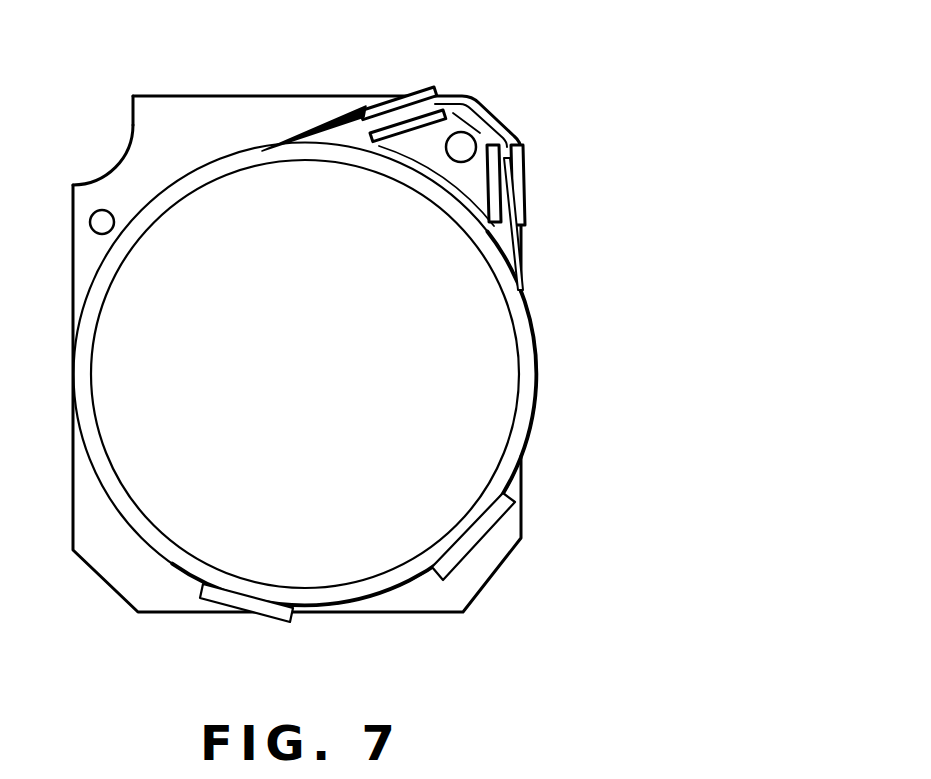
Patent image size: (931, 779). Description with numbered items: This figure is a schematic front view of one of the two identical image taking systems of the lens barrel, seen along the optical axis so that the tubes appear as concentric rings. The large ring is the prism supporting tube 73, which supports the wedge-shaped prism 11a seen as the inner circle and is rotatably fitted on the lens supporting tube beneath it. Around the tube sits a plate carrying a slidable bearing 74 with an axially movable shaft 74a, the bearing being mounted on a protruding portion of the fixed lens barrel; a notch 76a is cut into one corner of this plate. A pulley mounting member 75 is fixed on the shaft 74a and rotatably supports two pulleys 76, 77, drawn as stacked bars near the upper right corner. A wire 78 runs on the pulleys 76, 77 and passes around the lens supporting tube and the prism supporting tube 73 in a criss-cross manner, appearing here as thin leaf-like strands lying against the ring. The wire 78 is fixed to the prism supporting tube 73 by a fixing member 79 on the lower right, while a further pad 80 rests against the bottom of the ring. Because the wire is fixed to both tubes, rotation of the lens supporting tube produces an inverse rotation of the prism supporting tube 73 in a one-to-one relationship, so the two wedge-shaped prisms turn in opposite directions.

The wedge-shaped prism 11a is at (480, 360).
The prism supporting tube 73 is at (527, 430).
The slidable bearing 74 is at (455, 112).
The shaft 74a is at (461, 147).
The pulley mounting member 75 is at (510, 120).
The pulley 76 is at (410, 93).
The notch 76a is at (133, 173).
The pulley 77 is at (528, 177).
The wire 78 is at (335, 128).
The fixing member 79 is at (478, 537).
The pad (bottom) 80 is at (247, 603).